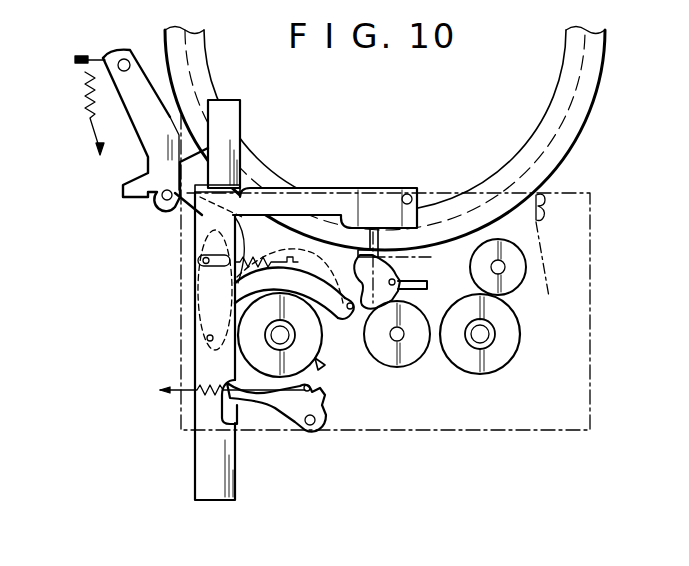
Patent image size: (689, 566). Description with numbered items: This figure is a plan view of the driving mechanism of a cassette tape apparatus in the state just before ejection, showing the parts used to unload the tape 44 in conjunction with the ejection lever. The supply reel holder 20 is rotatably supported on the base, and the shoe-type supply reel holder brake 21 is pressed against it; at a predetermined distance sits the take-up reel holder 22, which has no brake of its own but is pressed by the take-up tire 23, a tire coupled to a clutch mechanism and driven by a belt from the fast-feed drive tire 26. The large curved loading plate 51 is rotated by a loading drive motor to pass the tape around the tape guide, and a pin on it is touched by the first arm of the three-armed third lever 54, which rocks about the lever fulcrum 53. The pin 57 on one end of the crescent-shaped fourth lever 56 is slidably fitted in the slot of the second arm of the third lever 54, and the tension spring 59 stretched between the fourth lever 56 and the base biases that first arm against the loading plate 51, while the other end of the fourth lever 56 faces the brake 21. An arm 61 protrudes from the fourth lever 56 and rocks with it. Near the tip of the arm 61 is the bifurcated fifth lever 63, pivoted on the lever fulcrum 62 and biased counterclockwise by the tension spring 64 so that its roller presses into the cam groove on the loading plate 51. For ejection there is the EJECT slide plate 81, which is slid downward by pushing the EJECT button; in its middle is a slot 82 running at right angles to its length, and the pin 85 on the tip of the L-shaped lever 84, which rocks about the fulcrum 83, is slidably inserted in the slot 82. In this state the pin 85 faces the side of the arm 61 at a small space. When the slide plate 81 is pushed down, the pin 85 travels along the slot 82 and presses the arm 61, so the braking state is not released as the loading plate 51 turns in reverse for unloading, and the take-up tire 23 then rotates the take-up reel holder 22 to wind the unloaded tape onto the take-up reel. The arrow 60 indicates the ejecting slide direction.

The supply reel holder 20 is at (318, 344).
The supply reel holder brake 21 is at (317, 410).
The take-up reel holder 22 is at (512, 348).
The take-up tire 23 is at (511, 284).
The fast-feed drive tire 26 is at (418, 354).
The tape 44 is at (540, 235).
The loading plate 51 is at (587, 123).
The lever fulcrum 53 is at (400, 293).
The third lever 54 is at (398, 270).
The fourth lever 56 is at (202, 336).
The pin 57 is at (294, 279).
The tension spring 59 is at (264, 259).
The arrow 60 is at (184, 394).
The arm 61 is at (176, 212).
The lever fulcrum 62 is at (125, 58).
The fifth lever 63 is at (155, 149).
The tension spring 64 is at (86, 100).
The EJECT slide plate 81 is at (240, 109).
The slot 82 is at (197, 289).
The fulcrum 83 is at (407, 198).
The L-shaped lever 84 is at (379, 200).
The pin 85 is at (200, 260).